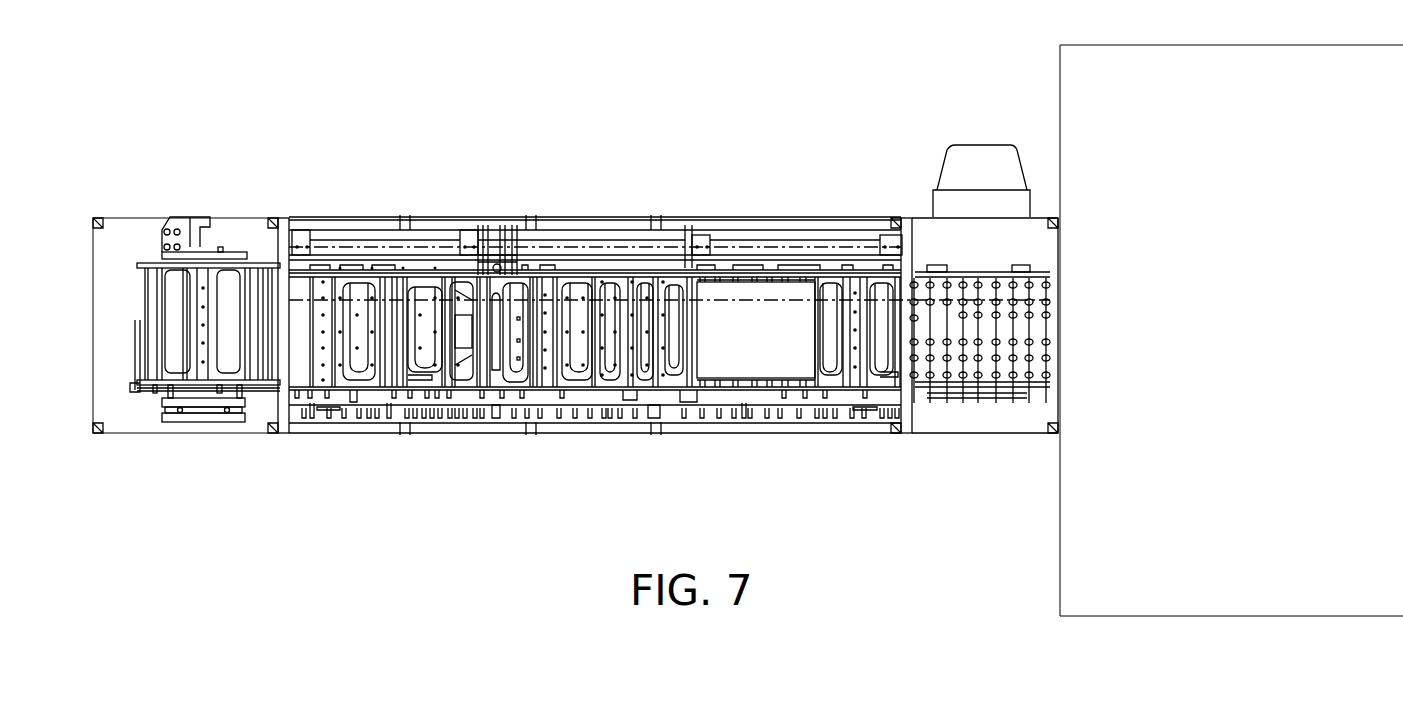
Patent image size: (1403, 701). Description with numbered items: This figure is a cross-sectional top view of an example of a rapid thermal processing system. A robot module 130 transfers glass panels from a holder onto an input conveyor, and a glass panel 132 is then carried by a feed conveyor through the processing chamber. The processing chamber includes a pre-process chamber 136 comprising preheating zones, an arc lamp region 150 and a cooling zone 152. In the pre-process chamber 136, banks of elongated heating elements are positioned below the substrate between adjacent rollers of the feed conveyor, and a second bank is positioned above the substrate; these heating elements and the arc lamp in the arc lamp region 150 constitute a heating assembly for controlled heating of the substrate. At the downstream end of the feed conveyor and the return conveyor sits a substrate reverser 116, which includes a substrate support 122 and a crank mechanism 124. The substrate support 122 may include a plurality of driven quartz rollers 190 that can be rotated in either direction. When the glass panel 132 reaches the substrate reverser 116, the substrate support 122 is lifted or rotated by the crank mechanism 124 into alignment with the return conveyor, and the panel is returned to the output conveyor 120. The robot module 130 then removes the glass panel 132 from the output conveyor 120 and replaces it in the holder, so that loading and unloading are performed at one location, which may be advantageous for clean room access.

The substrate reverser 116 is at (187, 203).
The substrate support 122 is at (152, 265).
The driven quartz rollers 190 is at (148, 352).
The crank mechanism 124 is at (190, 422).
The cooling zone 152 is at (348, 450).
The arc lamp region 150 is at (499, 450).
The pre-process chamber 136 is at (694, 450).
The glass panel 132 is at (748, 313).
The output conveyor 120 is at (988, 378).
The robot module 130 is at (1060, 78).